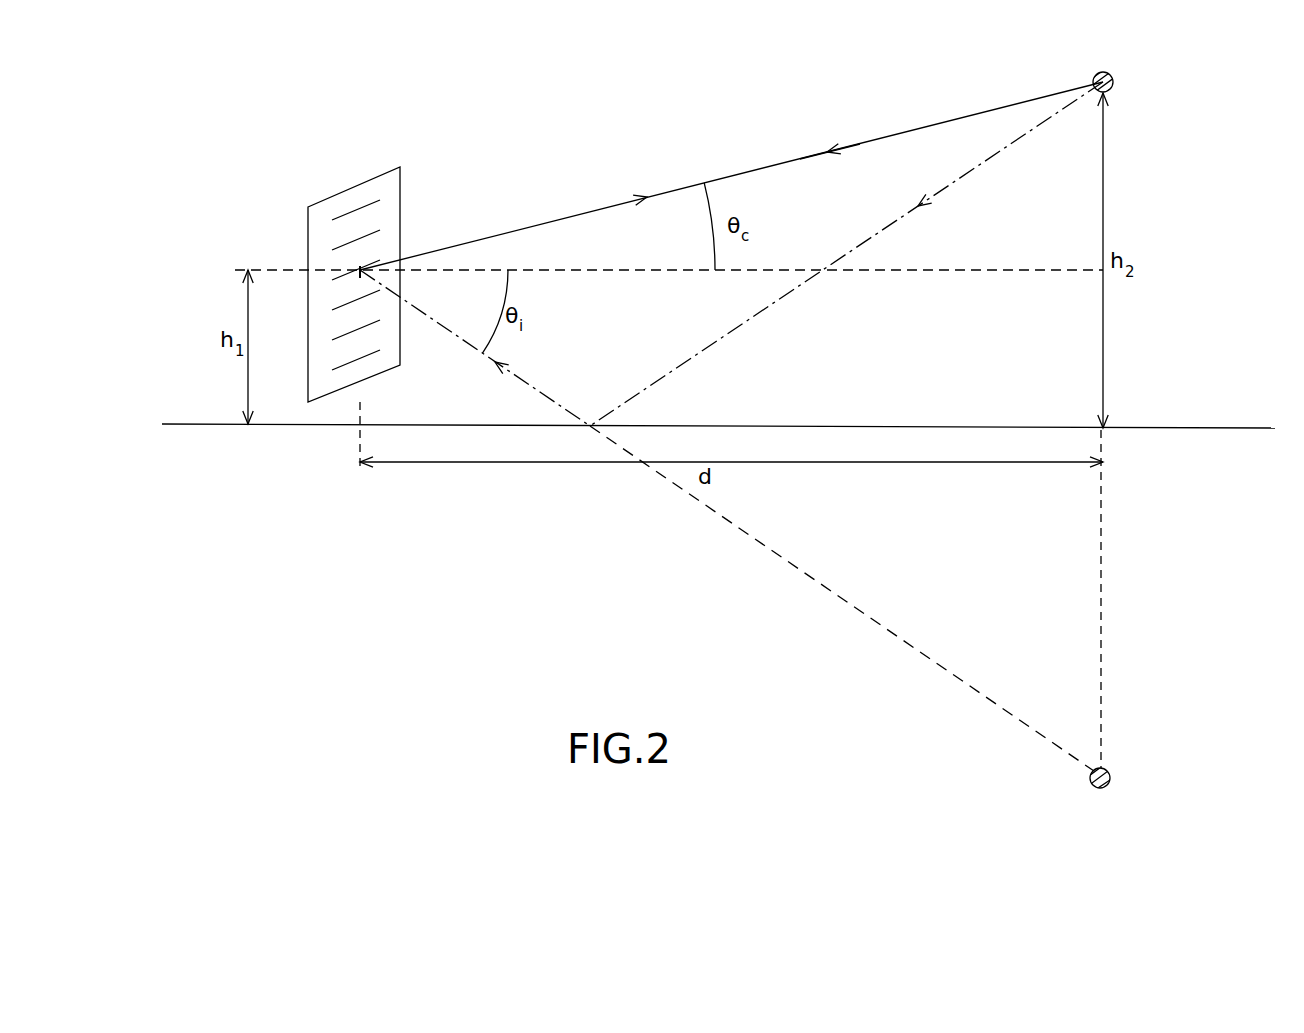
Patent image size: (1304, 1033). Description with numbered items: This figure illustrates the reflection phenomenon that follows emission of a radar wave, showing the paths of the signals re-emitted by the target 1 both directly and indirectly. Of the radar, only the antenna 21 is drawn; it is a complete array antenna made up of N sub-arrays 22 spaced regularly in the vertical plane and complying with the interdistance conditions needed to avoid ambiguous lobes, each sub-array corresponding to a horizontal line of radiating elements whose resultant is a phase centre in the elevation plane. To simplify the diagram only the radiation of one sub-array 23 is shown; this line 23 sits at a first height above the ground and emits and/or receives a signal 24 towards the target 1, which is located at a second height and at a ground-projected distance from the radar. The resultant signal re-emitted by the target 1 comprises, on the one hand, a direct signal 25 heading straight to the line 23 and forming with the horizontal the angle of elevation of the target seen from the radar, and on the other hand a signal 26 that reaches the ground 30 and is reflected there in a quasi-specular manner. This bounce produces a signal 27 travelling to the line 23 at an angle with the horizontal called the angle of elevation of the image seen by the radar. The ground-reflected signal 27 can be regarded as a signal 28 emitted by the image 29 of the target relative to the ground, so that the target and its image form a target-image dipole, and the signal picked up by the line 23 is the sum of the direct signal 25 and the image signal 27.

The target 1 is at (1112, 76).
The antenna 21 is at (401, 166).
The sub-arrays 22 is at (343, 192).
The sub-array 23 is at (375, 257).
The signal 24 is at (642, 191).
The direct signal 25 is at (835, 142).
The signal reflected by the ground 26 is at (885, 228).
The signal reflected by the ground 27 is at (500, 368).
The signal emitted by the image 28 is at (843, 600).
The image of the target 29 is at (1110, 771).
The ground 30 is at (1235, 428).